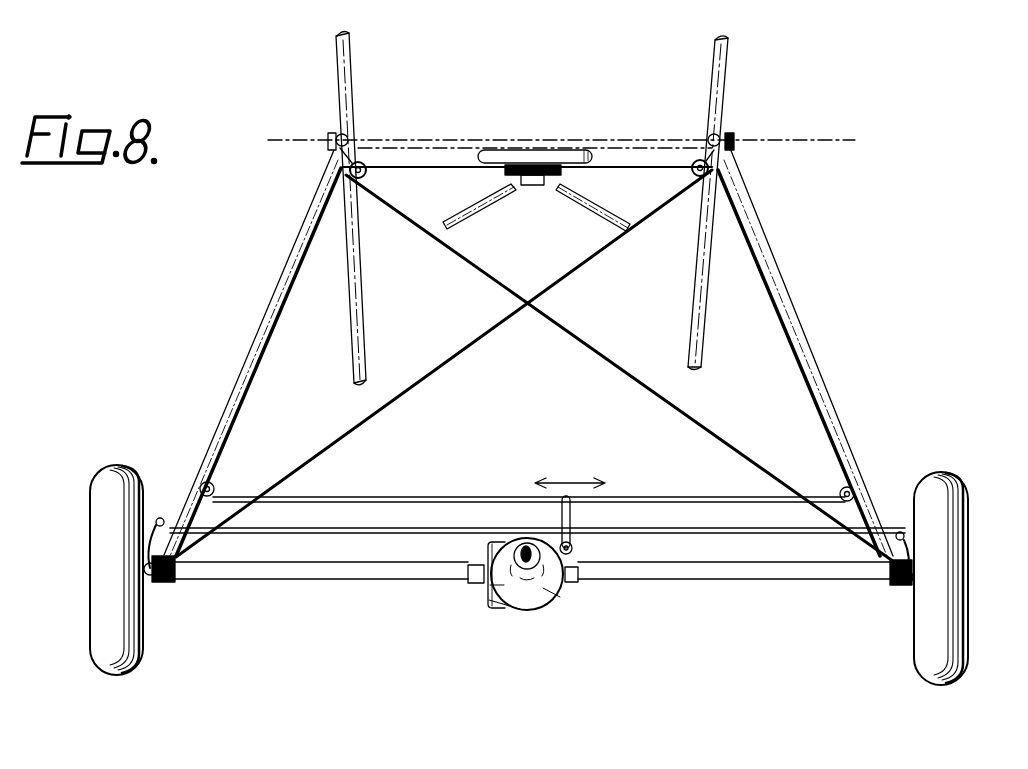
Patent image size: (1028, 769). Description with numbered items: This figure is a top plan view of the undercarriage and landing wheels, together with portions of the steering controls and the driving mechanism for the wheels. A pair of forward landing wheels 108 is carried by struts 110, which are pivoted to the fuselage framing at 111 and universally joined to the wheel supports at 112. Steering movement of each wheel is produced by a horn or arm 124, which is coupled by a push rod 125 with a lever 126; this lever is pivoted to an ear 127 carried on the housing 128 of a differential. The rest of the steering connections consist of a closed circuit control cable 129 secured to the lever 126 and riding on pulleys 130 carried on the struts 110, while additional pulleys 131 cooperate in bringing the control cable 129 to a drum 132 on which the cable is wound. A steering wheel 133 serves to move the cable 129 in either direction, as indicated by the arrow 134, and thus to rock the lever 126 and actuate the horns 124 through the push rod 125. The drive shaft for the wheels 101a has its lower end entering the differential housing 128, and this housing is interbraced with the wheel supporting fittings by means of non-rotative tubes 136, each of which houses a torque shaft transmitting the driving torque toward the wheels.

The drive shaft for the wheels 101a is at (527, 560).
The forward landing wheels 108 is at (95, 491).
The struts 110 is at (228, 398).
The pivot to fuselage framing 111 is at (734, 141).
The universal joint to wheel supports 112 is at (172, 520).
The horn 124 is at (155, 548).
The push rod 125 is at (355, 535).
The lever 126 is at (570, 520).
The ear 127 is at (572, 551).
The differential housing 128 is at (546, 596).
The control cable 129 is at (462, 497).
The pulleys 130 is at (213, 484).
The additional pulleys 131 is at (366, 174).
The drum 132 is at (548, 192).
The steering wheel 133 is at (530, 154).
The arrow 134 is at (578, 470).
The non-rotative tubes 136 is at (730, 582).